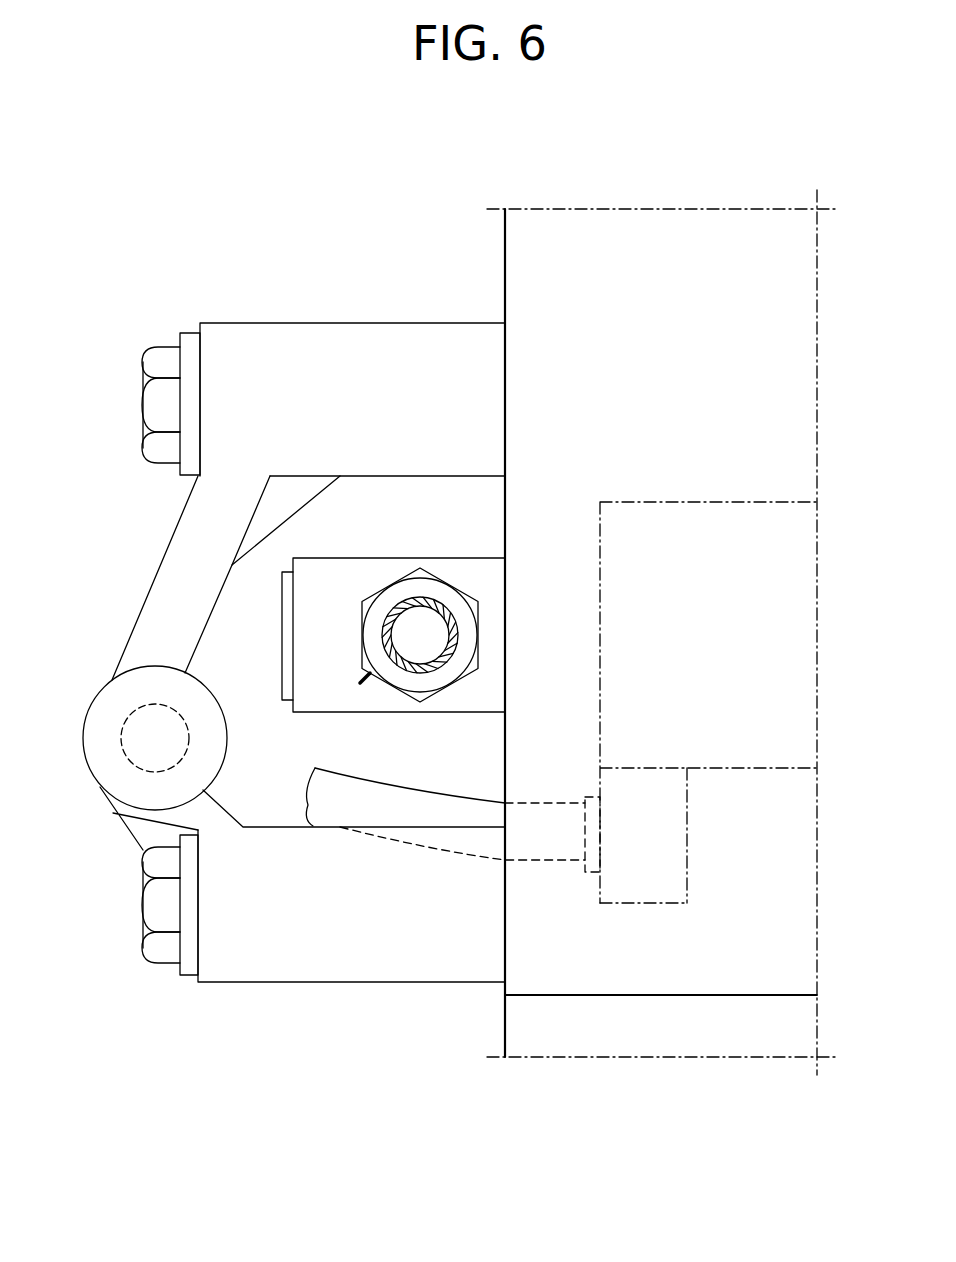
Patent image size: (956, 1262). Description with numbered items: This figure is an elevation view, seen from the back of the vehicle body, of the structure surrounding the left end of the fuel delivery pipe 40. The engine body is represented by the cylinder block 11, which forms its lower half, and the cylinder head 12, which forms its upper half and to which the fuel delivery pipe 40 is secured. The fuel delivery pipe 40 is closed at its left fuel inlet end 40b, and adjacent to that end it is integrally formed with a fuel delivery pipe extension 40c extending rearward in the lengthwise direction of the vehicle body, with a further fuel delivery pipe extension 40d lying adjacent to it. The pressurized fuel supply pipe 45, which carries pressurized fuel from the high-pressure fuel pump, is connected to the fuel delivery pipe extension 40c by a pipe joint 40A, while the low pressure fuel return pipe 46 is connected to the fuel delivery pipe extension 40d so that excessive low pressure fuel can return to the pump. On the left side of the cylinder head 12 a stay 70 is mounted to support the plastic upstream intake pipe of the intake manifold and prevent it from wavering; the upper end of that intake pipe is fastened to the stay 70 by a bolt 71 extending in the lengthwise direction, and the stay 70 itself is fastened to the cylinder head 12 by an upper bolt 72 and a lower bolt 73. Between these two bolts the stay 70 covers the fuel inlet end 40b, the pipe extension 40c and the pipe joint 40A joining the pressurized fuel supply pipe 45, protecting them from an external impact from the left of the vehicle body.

The cylinder block 11 is at (505, 1022).
The cylinder head 12 is at (505, 262).
The fuel delivery pipe 40 is at (680, 502).
The pipe joint 40A is at (365, 680).
The fuel inlet end 40b is at (430, 712).
The fuel delivery pipe extension 40c is at (448, 585).
The fuel delivery pipe extension 40d is at (680, 831).
The pressurized fuel supply pipe 45 is at (395, 605).
The low pressure fuel return pipe 46 is at (447, 853).
The stay 70 is at (145, 553).
The bolt 71 is at (127, 712).
The upper bolt 72 is at (145, 350).
The lower bolt 73 is at (142, 905).